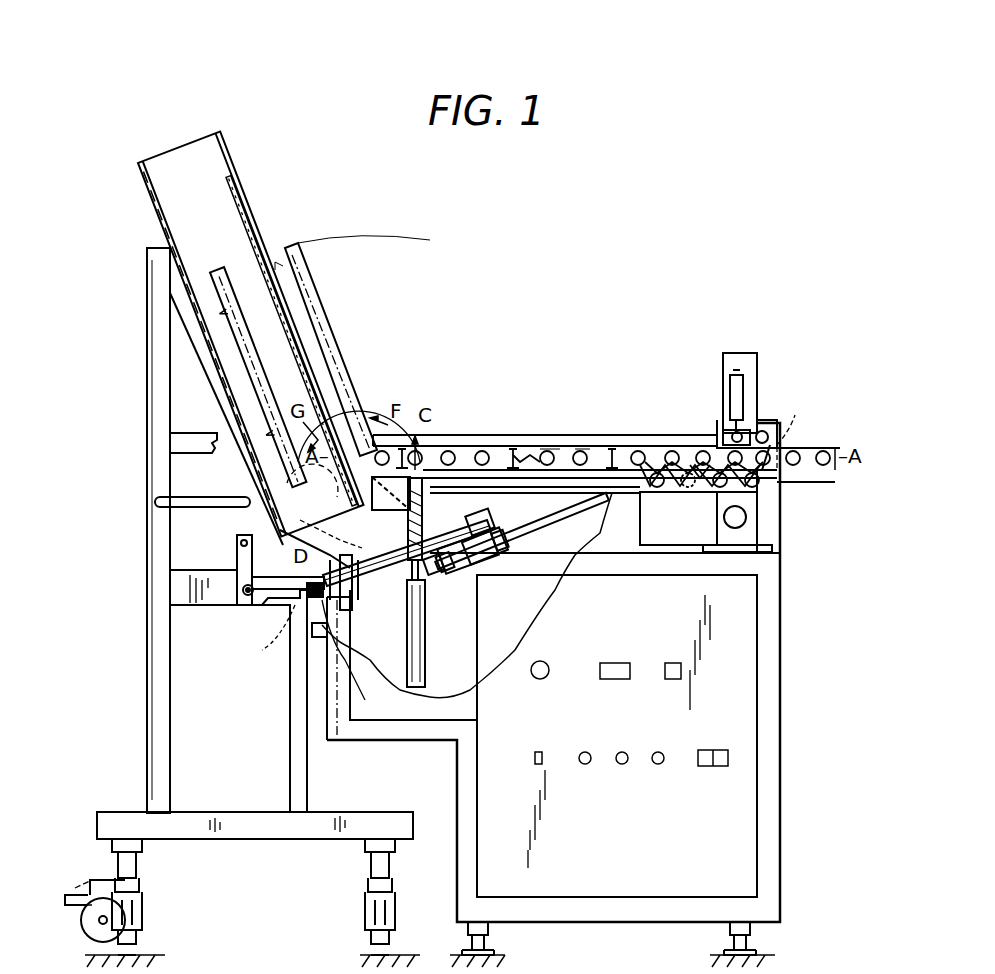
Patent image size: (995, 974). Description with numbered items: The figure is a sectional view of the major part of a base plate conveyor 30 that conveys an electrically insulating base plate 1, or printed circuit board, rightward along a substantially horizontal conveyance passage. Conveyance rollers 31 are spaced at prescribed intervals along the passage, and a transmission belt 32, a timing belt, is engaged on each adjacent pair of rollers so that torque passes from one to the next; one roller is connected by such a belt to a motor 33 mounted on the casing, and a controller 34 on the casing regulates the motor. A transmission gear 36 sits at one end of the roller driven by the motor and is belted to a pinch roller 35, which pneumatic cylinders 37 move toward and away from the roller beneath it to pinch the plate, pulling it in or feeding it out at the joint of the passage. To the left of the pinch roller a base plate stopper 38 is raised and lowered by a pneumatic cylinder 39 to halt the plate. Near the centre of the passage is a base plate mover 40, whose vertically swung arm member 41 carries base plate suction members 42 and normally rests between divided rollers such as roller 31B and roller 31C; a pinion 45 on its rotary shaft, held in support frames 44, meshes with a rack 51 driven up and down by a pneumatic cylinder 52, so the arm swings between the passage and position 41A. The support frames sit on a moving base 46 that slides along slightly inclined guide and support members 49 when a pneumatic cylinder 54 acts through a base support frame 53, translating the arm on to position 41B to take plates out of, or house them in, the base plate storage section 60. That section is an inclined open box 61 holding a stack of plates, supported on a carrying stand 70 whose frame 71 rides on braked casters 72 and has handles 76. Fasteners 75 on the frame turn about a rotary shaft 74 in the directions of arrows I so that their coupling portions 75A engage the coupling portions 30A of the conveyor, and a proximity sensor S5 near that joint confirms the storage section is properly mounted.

The base plate 1 is at (289, 328).
The base plate conveyor 30 is at (584, 689).
The coupling portion of the base plate conveyor 30A is at (366, 667).
The conveyance roller 31 is at (700, 455).
The divided conveyance roller 31B is at (548, 450).
The chain link plate 31C is at (582, 450).
The transmission belt 32 is at (678, 455).
The motor 33 is at (780, 539).
The controller 34 is at (760, 705).
The pinch roller 35 is at (728, 428).
The transmission gear 36 is at (780, 420).
The pneumatic cylinder 37 is at (745, 390).
The base plate stopper 38 is at (712, 505).
The pneumatic cylinder 39 is at (725, 525).
The base plate mover 40 is at (455, 446).
The vertically swung arm member 41 is at (525, 468).
The position of arm member 41A is at (325, 320).
The position of arm member 41B is at (266, 368).
The base plate suction member 42 is at (510, 450).
The support frame 44 is at (400, 615).
The pinion 45 is at (352, 527).
The moving base 46 is at (475, 516).
The guide and support member 49 is at (350, 608).
The rack 51 is at (470, 565).
The pneumatic cylinder 52 is at (426, 648).
The base support frame 53 is at (432, 583).
The pneumatic cylinder 54 is at (575, 512).
The base plate storage section 60 is at (261, 298).
The box 61 is at (244, 306).
The carrying stand 70 is at (145, 380).
The frame 71 is at (150, 470).
The caster 72 is at (142, 945).
The rotary shaft 74 is at (240, 612).
The fastener 75 is at (237, 556).
The coupling portion of the fastener 75A is at (278, 616).
The handle 76 is at (200, 497).
The proximity sensor S5 is at (312, 630).
The arrows I is at (278, 580).